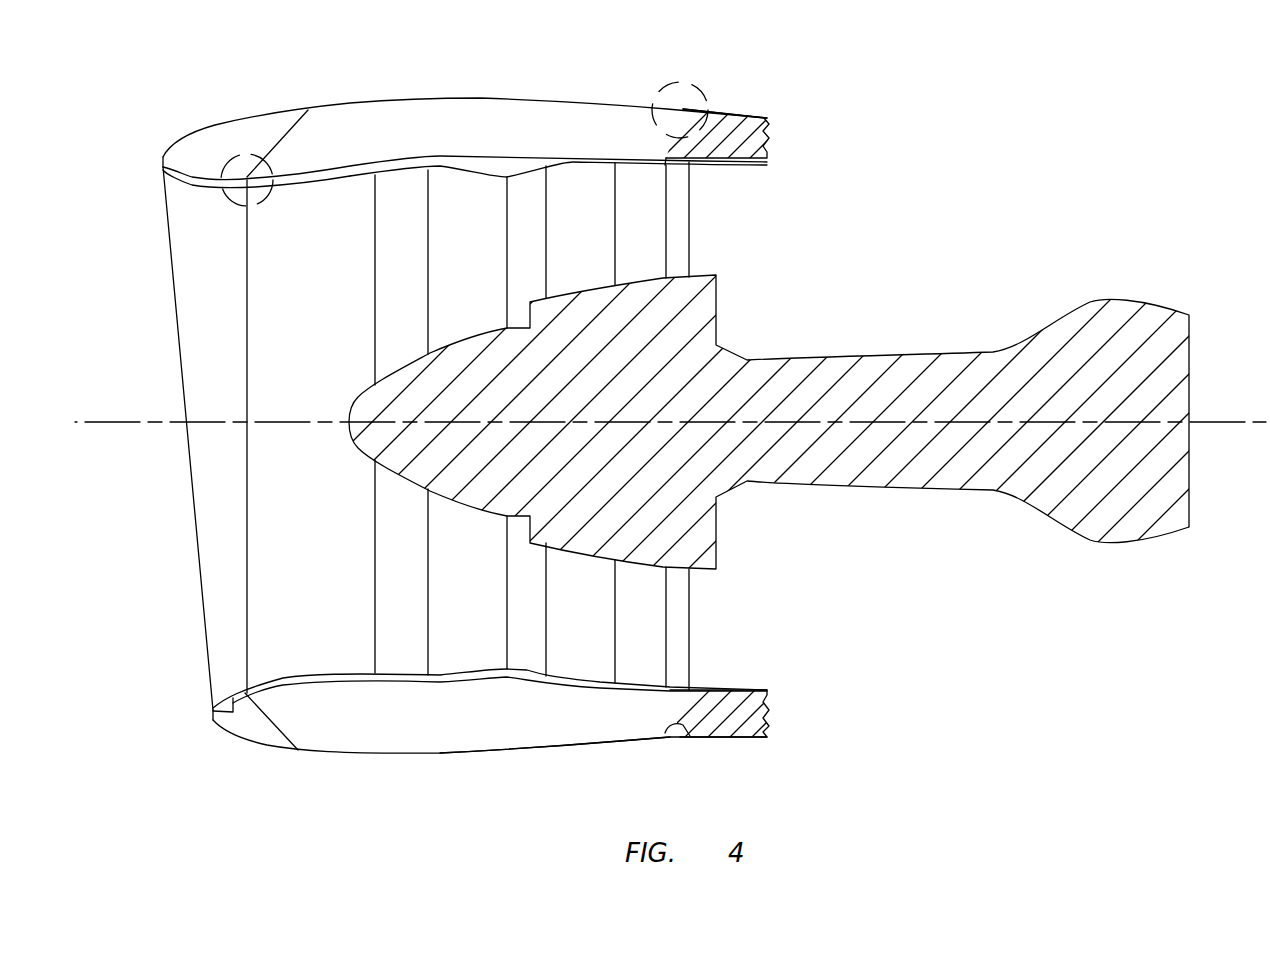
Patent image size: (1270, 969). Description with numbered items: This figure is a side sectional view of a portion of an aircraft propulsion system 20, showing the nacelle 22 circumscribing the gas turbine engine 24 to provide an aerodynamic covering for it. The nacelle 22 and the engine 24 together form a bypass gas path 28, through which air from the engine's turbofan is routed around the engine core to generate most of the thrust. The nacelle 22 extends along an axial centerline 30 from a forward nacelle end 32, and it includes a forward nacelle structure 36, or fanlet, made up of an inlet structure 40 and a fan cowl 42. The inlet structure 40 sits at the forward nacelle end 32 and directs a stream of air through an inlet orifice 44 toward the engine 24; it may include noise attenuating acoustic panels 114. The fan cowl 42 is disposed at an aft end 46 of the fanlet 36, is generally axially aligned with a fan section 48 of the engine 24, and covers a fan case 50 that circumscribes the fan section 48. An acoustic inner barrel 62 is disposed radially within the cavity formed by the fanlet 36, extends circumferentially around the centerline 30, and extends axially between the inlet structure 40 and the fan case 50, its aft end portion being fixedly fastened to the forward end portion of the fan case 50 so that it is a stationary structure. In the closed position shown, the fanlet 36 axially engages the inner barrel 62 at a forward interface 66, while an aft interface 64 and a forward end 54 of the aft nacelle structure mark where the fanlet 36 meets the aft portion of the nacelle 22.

The aircraft propulsion system 20 is at (170, 100).
The nacelle 22 is at (279, 762).
The gas turbine engine 24 is at (755, 328).
The bypass gas path 28 is at (714, 208).
The axial centerline 30 is at (1230, 423).
The forward nacelle end 32 is at (163, 157).
The forward nacelle structure 36 is at (360, 762).
The inlet structure 40 is at (235, 742).
The fan cowl 42 is at (515, 749).
The inlet orifice 44 is at (186, 480).
The aft end of the fanlet 46 is at (722, 103).
The fan section 48 is at (391, 547).
The fan case 50 is at (468, 157).
The forward end of the aft nacelle structure 54 is at (683, 109).
The acoustic inner barrel 62 is at (307, 183).
The aft interface 64 is at (712, 103).
The forward interface 66 is at (255, 157).
The noise attenuating acoustic panels 114 is at (193, 186).